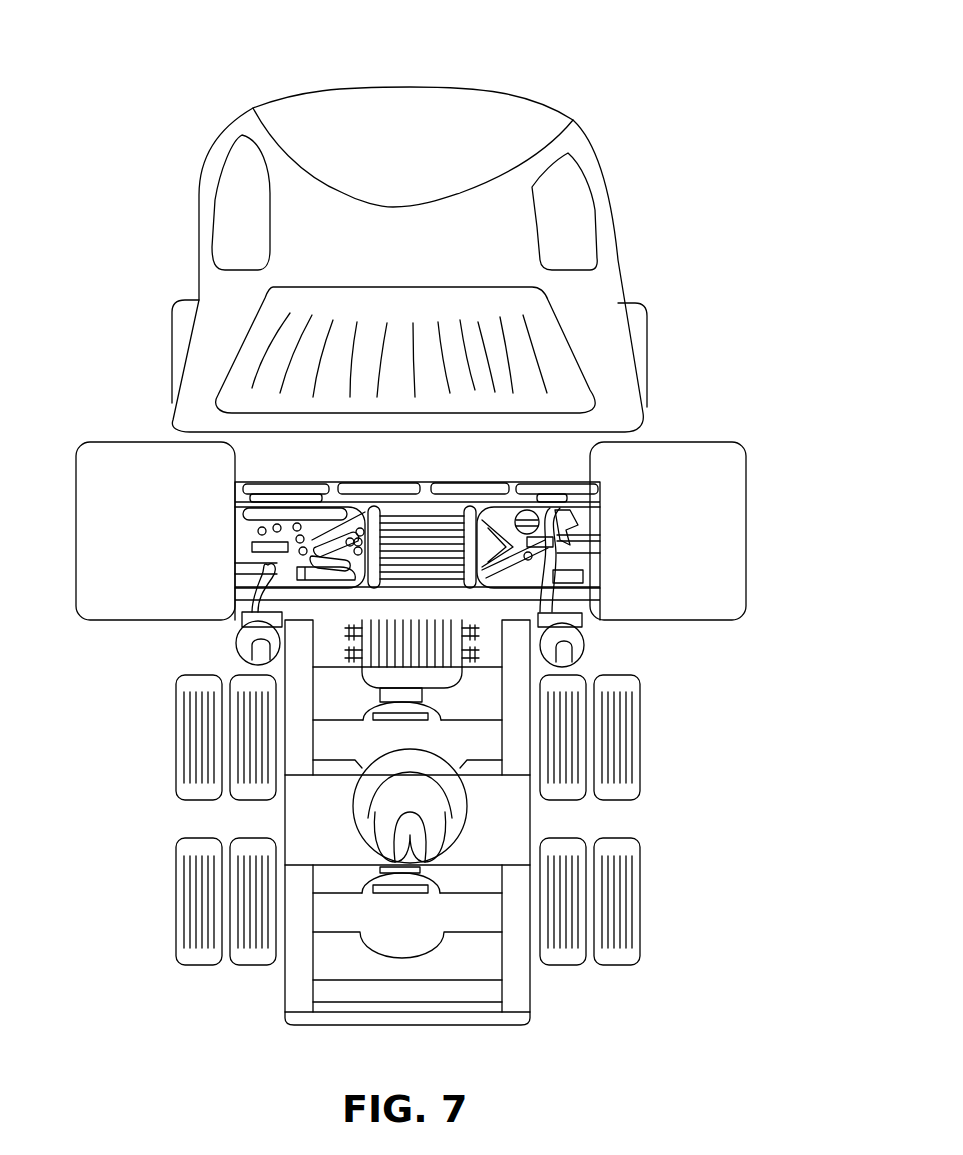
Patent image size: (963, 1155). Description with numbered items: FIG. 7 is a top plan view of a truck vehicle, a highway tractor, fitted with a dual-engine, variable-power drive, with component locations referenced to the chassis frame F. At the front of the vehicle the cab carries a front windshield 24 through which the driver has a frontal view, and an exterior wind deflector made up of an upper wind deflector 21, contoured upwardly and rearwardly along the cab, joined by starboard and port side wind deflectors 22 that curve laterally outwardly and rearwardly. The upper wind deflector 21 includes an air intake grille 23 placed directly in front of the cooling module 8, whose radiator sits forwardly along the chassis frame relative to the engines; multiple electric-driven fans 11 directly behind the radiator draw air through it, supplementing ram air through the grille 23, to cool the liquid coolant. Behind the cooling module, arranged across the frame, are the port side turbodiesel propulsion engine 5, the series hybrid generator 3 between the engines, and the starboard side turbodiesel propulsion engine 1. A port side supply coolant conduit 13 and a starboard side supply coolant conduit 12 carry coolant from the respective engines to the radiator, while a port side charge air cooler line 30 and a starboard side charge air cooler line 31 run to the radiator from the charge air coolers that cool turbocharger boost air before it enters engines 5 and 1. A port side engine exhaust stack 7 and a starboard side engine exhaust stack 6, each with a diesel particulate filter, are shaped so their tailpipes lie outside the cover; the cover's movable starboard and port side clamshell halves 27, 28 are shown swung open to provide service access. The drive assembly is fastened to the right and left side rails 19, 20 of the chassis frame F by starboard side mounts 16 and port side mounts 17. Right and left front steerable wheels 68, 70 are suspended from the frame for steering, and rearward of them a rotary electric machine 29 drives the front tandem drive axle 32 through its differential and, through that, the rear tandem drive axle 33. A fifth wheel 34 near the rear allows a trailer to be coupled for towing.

The starboard side turbodiesel propulsion engine 1 is at (595, 540).
The series hybrid generator 3 is at (432, 583).
The port side turbodiesel propulsion engine 5 is at (235, 545).
The starboard side engine exhaust stack 6 is at (590, 645).
The port side engine exhaust stack 7 is at (240, 640).
The cooling module 8 is at (420, 487).
The electric-driven fans 11 is at (300, 482).
The starboard side supply coolant conduit 12 is at (500, 490).
The port side supply coolant conduit 13 is at (330, 487).
The starboard side mounts 16 is at (528, 640).
The port side mounts 17 is at (292, 655).
The right side rail 19 is at (530, 990).
The left side rail 20 is at (285, 990).
The upper wind deflector 21 is at (622, 420).
The starboard side and port side wind deflectors 22 is at (210, 333).
The air intake grille 23 is at (548, 320).
The front windshield 24 is at (522, 117).
The starboard side clamshell half 27 is at (748, 520).
The port side clamshell half 28 is at (72, 528).
The rotary electric machine 29 is at (447, 688).
The port side charge air cooler line 30 is at (237, 500).
The starboard side charge air cooler line 31 is at (595, 500).
The front tandem drive axle 32 is at (366, 740).
The rear tandem drive axle 33 is at (392, 938).
The fifth wheel 34 is at (415, 762).
The right front steerable wheel 68 is at (647, 300).
The left front steerable wheel 70 is at (175, 300).
The chassis frame F is at (300, 1022).